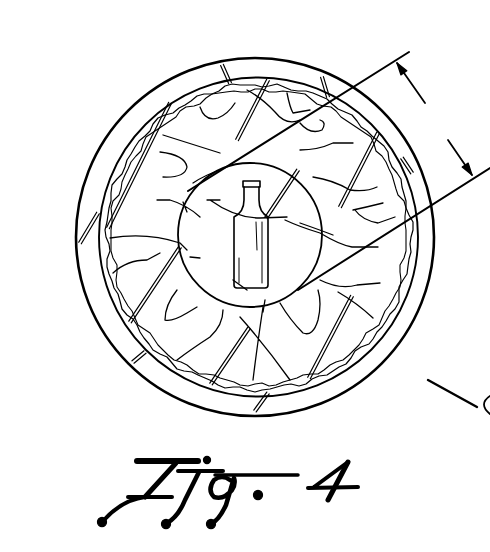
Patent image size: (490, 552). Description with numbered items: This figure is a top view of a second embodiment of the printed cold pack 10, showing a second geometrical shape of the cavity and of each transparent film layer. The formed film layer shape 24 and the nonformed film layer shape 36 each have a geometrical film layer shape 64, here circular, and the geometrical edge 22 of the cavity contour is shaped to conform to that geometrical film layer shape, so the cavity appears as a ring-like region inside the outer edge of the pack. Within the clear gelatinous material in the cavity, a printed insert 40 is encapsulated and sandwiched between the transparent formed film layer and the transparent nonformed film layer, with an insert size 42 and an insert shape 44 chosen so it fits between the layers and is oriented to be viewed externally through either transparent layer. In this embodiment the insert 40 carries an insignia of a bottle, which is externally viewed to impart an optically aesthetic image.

The printed cold pack 10 is at (165, 72).
The geometrical edge 22 is at (113, 160).
The formed film layer shape 24 is at (246, 212).
The nonformed film layer shape 36 is at (246, 212).
The geometrical film layer shape 64 is at (230, 60).
The printed insert 40 is at (215, 217).
The insert size 42 is at (339, 171).
The insert shape 44 is at (303, 290).